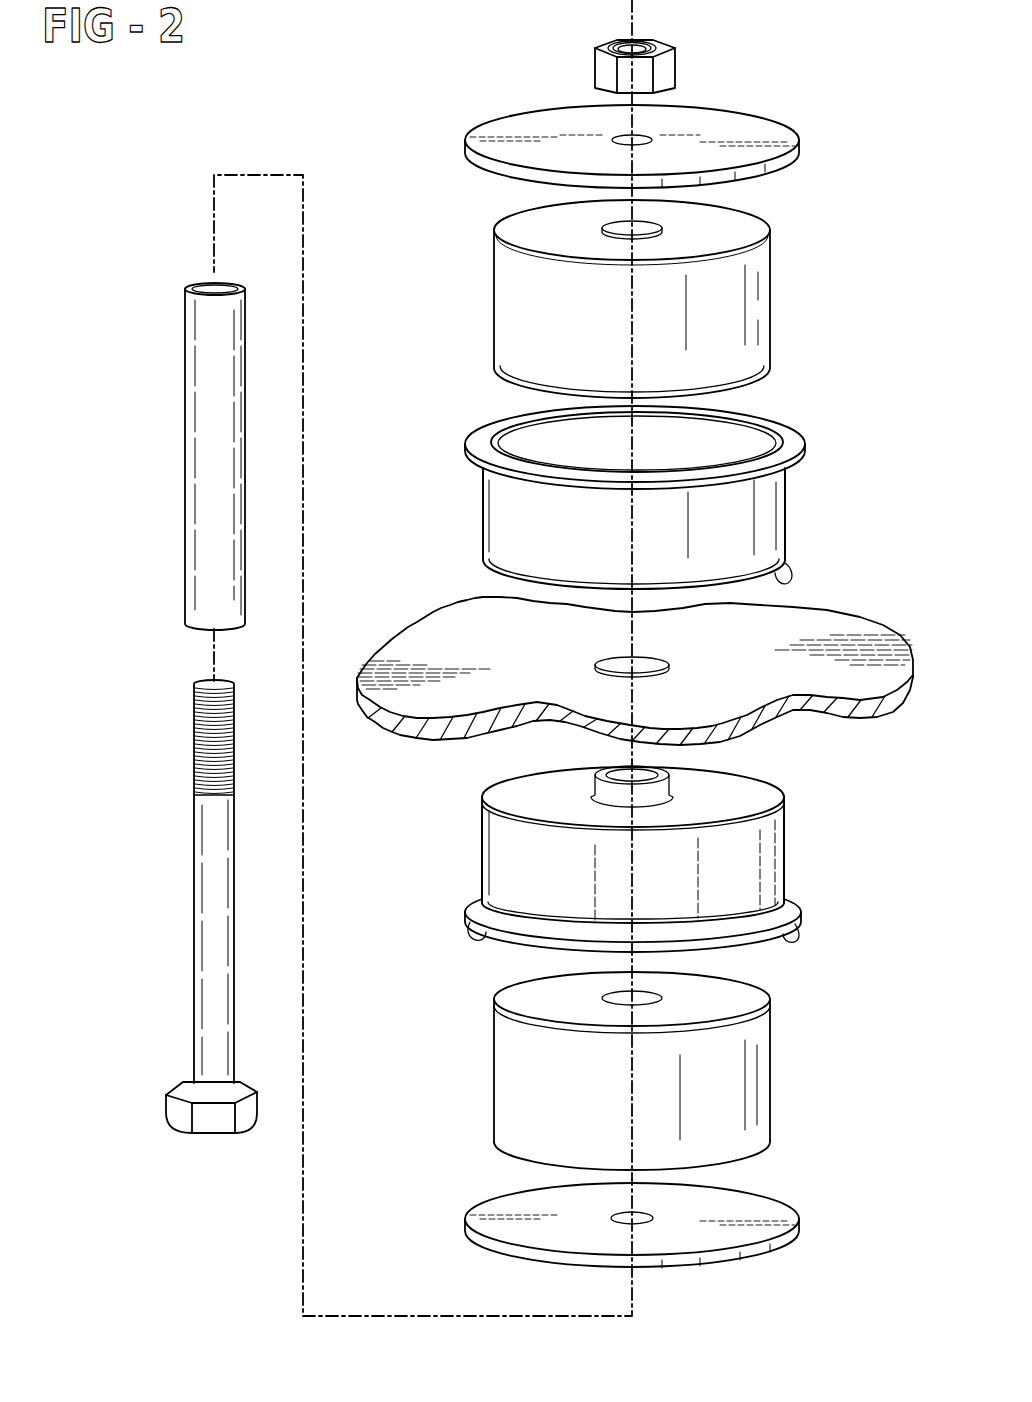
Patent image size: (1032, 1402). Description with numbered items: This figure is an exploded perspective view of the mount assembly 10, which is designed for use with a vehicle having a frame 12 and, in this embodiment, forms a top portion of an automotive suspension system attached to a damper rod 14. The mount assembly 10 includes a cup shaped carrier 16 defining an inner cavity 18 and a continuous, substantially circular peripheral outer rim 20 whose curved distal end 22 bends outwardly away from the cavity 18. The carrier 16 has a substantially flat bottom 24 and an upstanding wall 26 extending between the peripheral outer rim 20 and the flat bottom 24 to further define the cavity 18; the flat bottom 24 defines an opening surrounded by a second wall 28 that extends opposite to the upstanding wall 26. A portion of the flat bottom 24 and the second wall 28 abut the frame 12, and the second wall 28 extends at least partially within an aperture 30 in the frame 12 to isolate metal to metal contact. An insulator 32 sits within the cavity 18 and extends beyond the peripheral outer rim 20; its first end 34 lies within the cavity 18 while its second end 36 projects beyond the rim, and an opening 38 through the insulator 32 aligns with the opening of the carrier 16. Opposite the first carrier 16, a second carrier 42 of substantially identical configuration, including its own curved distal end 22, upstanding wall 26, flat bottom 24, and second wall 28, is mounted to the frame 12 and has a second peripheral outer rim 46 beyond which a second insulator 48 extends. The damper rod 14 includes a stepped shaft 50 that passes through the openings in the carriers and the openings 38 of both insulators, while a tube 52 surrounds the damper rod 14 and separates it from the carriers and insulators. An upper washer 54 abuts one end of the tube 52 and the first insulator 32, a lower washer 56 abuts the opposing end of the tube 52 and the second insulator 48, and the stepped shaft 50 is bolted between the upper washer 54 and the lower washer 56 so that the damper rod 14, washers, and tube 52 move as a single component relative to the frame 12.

The mount assembly 10 is at (423, 118).
The frame 12 is at (635, 656).
The damper rod 14 is at (202, 1113).
The carrier 16 is at (643, 480).
The inner cavity 18 is at (748, 442).
The peripheral outer rim 20 is at (517, 422).
The curved distal end 22 is at (792, 440).
The flat bottom 24 is at (770, 580).
The upstanding wall 26 is at (490, 505).
The second wall 28 is at (603, 790).
The aperture 30 is at (643, 660).
The insulator 32 is at (673, 289).
The first end 34 is at (757, 387).
The second end 36 is at (745, 221).
The opening 38 is at (660, 227).
The second carrier 42 is at (664, 842).
The second peripheral outer rim 46 is at (793, 933).
The second insulator 48 is at (740, 1075).
The stepped shaft 50 is at (210, 900).
The tube 52 is at (201, 475).
The upper washer 54 is at (717, 120).
The lower washer 56 is at (765, 1218).